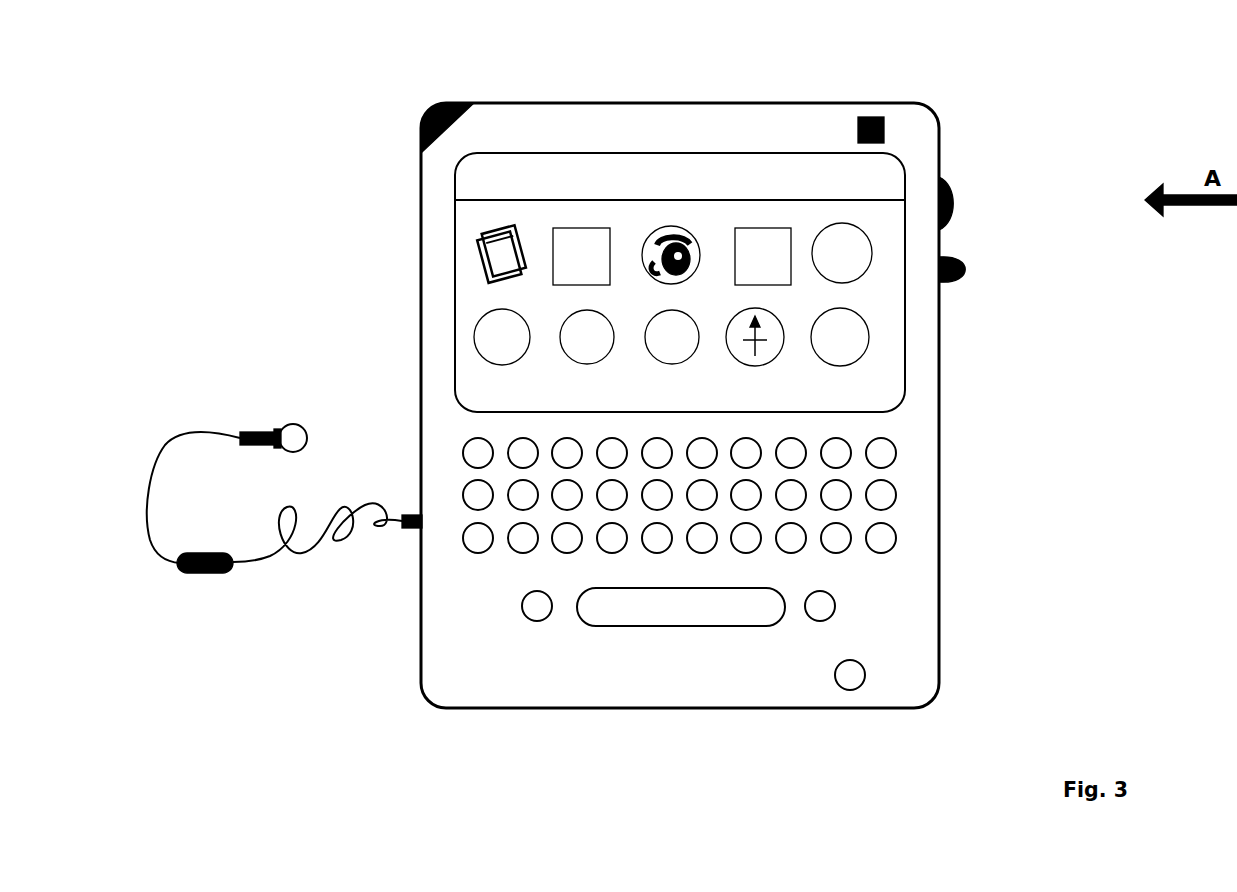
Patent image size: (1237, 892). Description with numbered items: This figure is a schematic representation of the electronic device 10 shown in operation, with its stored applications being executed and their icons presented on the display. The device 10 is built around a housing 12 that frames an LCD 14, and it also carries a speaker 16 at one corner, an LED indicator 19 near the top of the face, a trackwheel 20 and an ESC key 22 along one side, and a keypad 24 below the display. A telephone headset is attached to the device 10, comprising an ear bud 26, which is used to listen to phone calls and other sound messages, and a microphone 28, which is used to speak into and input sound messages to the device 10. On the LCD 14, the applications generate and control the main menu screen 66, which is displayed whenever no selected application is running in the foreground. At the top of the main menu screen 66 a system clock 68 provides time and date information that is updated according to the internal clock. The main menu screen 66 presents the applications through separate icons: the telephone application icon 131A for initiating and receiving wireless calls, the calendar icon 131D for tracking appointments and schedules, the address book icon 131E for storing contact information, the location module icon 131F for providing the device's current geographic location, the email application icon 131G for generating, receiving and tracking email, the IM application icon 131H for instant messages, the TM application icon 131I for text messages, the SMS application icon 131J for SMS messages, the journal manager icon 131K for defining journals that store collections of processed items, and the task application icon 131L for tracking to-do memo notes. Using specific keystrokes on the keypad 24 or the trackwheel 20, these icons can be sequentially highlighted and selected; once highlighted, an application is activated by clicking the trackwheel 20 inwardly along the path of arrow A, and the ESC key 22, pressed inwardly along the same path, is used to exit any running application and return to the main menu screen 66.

The electronic device 10 is at (580, 710).
The housing 12 is at (795, 685).
The LCD 14 is at (887, 370).
The speaker 16 is at (405, 128).
The LED indicator 19 is at (903, 125).
The trackwheel 20 is at (970, 200).
The ESC key 22 is at (975, 270).
The keypad 24 is at (896, 494).
The ear bud 26 is at (308, 418).
The microphone 28 is at (205, 542).
The main menu screen 66 is at (887, 307).
The system clock 68 is at (472, 174).
The telephone application icon 131A is at (685, 288).
The calendar icon 131D is at (524, 287).
The address book icon 131E is at (602, 292).
The location module icon 131F is at (775, 372).
The email application icon 131G is at (782, 291).
The IM application icon 131H is at (524, 372).
The TM application icon 131I is at (606, 372).
The SMS application icon 131J is at (692, 372).
The journal manager icon 131K is at (862, 289).
The task application icon 131L is at (860, 372).